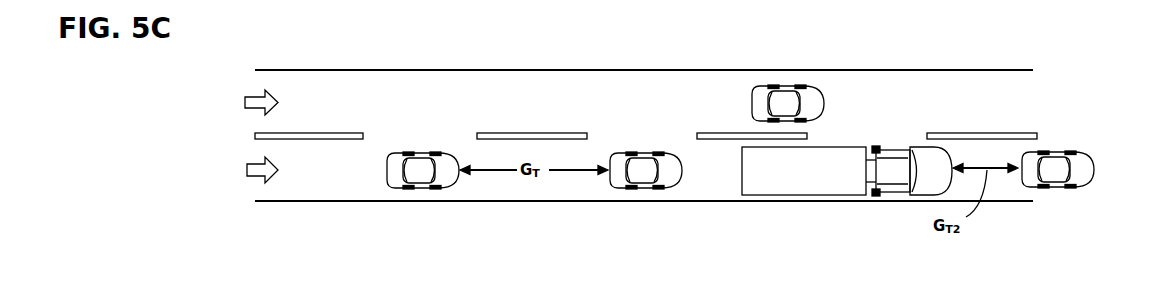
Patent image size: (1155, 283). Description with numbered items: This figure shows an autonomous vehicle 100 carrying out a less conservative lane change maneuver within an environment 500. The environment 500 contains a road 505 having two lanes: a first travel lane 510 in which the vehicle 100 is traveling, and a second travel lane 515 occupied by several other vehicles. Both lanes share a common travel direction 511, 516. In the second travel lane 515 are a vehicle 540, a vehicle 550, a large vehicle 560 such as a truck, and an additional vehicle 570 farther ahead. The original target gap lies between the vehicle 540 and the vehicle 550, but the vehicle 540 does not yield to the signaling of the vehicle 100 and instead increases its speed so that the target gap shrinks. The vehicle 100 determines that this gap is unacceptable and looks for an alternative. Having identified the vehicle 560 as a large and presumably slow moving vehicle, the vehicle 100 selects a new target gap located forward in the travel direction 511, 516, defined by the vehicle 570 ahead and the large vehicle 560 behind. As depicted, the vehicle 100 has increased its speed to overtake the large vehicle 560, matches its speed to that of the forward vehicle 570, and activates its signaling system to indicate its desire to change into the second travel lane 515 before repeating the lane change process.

The vehicle 100 is at (790, 92).
The environment 500 is at (644, 121).
The road 505 is at (243, 56).
The travel lane 510 is at (644, 91).
The travel direction 511 is at (245, 102).
The second travel lane 515 is at (644, 181).
The travel direction 516 is at (247, 170).
The vehicle 540 is at (419, 189).
The vehicle 550 is at (637, 189).
The large vehicle 560 is at (890, 197).
The vehicle 570 is at (1070, 189).